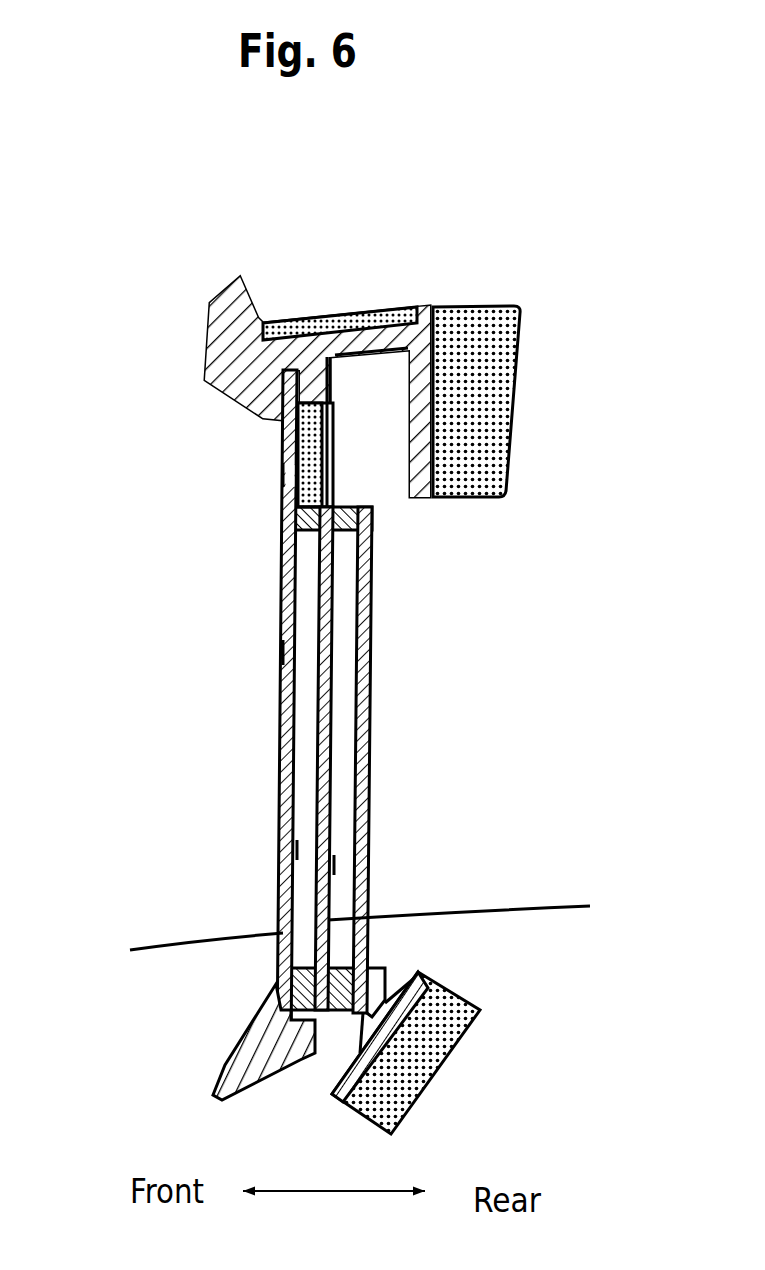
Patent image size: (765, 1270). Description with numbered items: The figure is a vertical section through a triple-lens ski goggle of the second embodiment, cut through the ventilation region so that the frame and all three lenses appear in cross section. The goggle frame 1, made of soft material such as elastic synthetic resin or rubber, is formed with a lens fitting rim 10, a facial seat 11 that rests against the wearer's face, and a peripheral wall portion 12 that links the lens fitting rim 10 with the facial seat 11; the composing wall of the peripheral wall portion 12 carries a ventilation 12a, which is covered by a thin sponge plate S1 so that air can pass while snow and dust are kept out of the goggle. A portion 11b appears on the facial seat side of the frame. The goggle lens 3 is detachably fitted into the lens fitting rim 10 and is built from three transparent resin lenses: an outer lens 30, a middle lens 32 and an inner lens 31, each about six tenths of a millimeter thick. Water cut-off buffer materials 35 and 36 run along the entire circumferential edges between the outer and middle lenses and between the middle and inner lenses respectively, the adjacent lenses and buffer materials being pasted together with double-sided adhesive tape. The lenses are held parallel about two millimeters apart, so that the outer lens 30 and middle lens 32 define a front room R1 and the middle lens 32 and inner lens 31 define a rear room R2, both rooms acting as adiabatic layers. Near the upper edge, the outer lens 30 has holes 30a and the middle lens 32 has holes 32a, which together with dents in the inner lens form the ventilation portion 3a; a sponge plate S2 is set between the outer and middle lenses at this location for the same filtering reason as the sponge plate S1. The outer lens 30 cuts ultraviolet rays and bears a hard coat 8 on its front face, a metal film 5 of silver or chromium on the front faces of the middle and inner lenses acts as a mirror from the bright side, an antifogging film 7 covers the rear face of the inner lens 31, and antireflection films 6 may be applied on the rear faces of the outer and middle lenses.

The goggle frame 1 is at (214, 270).
The goggle lens 3 is at (281, 766).
The ventilation portion 3a is at (280, 478).
The metal film 5 is at (318, 671).
The antireflection film 6 is at (343, 936).
The antifogging film 7 is at (375, 625).
The hard coat 8 is at (281, 654).
The lens fitting rim 10 is at (262, 412).
The facial seat 11 is at (423, 307).
The rear bracket cushion 11b is at (487, 307).
The peripheral wall portion 12 is at (313, 350).
The ventilation 12a is at (373, 340).
The outer lens 30 is at (297, 718).
The holes 30a is at (283, 463).
The inner lens 31 is at (372, 585).
The middle lens 32 is at (325, 822).
The holes 32a is at (327, 467).
The water cut-off buffer material 35 is at (283, 560).
The water cut-off buffer material 36 is at (373, 517).
The sponge plate S1 is at (271, 322).
The sponge plate S2 is at (283, 510).
The front room R1 is at (297, 857).
The rear room R2 is at (340, 863).